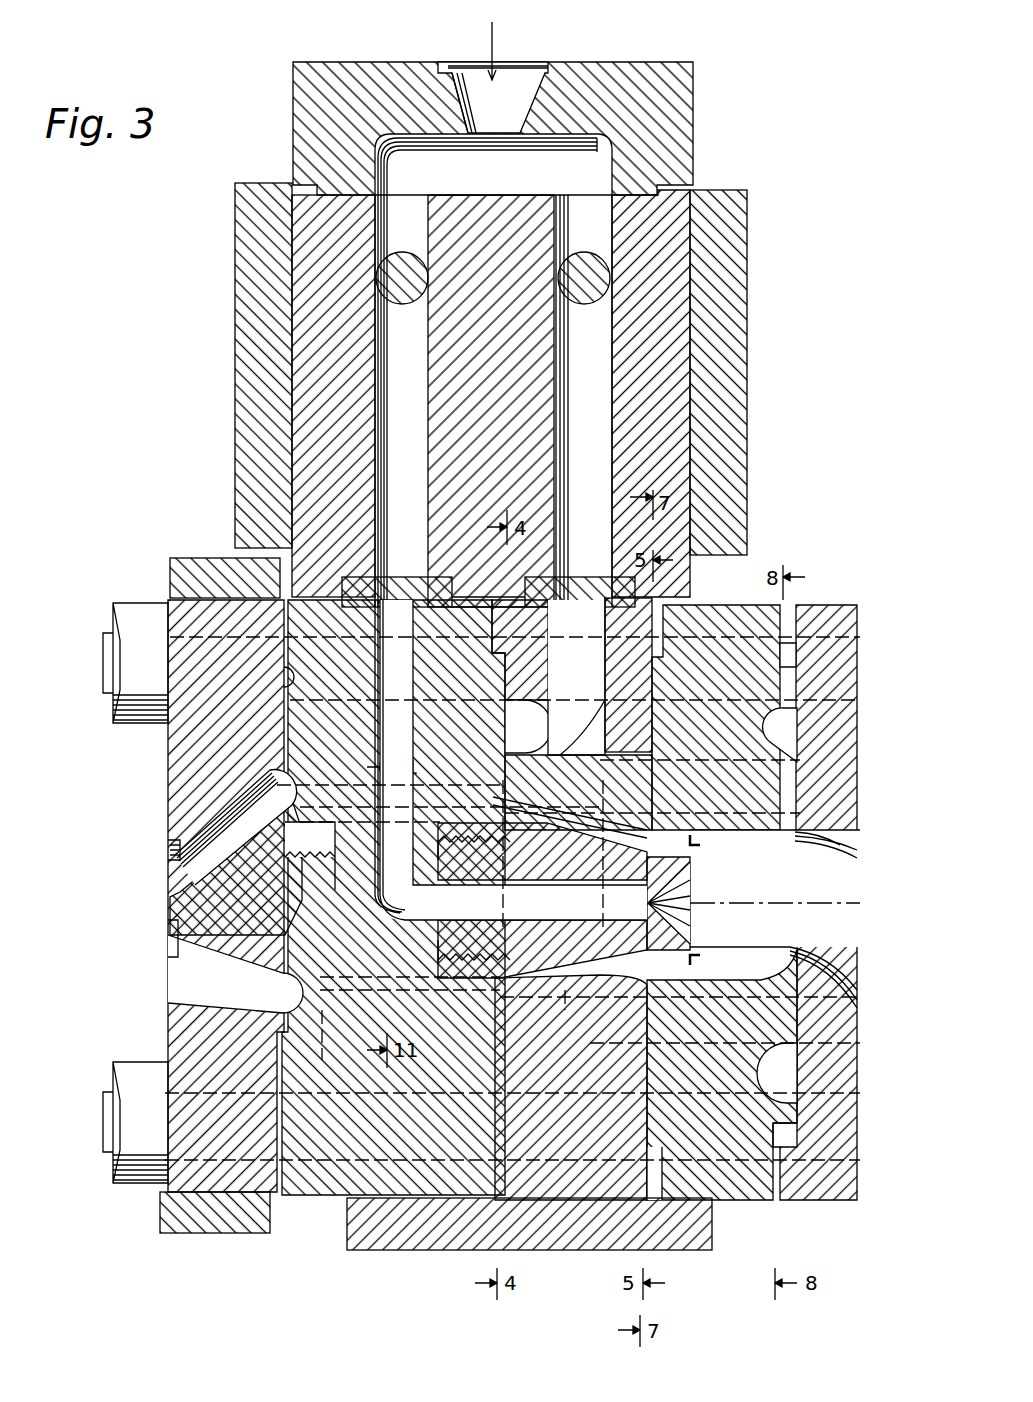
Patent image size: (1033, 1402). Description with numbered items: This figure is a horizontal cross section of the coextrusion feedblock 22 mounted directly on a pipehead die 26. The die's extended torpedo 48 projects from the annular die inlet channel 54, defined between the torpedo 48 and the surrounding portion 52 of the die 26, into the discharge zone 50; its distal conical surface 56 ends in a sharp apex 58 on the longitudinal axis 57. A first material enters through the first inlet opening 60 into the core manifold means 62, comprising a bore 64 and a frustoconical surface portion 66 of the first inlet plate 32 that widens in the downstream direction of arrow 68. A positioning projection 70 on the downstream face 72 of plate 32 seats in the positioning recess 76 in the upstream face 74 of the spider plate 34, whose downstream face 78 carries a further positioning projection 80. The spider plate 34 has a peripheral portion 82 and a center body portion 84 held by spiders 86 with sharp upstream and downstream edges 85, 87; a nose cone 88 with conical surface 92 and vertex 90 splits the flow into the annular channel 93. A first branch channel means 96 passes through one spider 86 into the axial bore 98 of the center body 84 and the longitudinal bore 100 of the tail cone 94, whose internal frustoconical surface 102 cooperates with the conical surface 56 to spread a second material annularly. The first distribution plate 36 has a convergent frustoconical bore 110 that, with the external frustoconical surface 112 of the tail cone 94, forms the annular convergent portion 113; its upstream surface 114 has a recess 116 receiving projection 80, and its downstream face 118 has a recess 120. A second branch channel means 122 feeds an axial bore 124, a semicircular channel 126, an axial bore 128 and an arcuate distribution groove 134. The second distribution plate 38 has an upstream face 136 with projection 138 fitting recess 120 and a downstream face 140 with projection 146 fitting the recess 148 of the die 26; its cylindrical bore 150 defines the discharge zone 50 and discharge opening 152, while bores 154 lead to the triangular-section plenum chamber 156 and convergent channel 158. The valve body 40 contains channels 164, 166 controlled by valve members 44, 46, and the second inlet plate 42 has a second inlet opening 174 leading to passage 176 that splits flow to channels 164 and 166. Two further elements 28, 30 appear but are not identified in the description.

The feedblock 22 is at (150, 746).
The pipehead die 26 is at (882, 1205).
The bolt 28 is at (108, 655).
The bolt head 30 is at (130, 620).
The first inlet plate 32 is at (180, 1215).
The spider plate 34 is at (293, 1198).
The first distribution plate 36 is at (566, 1200).
The second distribution plate 38 is at (700, 1148).
The valve body 40 is at (690, 425).
The second inlet plate 42 is at (685, 100).
The valve member 44 is at (395, 275).
The valve member 46 is at (595, 278).
The torpedo 48 is at (850, 882).
The discharge zone 50 is at (815, 782).
The surrounding portion 52 is at (830, 790).
The annular die inlet channel 54 is at (822, 838).
The conical surface 56 is at (680, 890).
The longitudinal axis 57 is at (768, 903).
The sharp apex 58 is at (662, 902).
The first inlet opening 60 is at (175, 928).
The core manifold means 62 is at (168, 1000).
The bore 64 is at (230, 958).
The frustoconical surface portion 66 is at (220, 845).
The arrow 68 is at (110, 893).
The positioning projection 70 is at (288, 770).
The downstream face 72 is at (285, 665).
The upstream face 74 is at (290, 635).
The positioning recess 76 is at (290, 783).
The downstream face 78 is at (495, 632).
The positioning projection 80 is at (505, 672).
The peripheral portion 82 is at (353, 1170).
The center body portion 84 is at (360, 958).
The sharp upstream edge 85 is at (355, 790).
The spider 86 is at (368, 790).
The sharp downstream edge 87 is at (490, 795).
The upstream nose cone 88 is at (250, 985).
The vertex 90 is at (178, 855).
The conical surface 92 is at (262, 1010).
The annular channel 93 is at (378, 712).
The tail cone 94 is at (630, 765).
The first branch channel means 96 is at (250, 585).
The axially extending bore 98 is at (495, 900).
The longitudinal bore 100 is at (600, 802).
The internal frustoconical surface 102 is at (590, 832).
The convergent frustoconical bore 110 is at (560, 992).
The external frustoconical surface 112 is at (625, 768).
The annular convergent portion 113 is at (565, 1002).
The upstream surface 114 is at (422, 1200).
The cylindrical recess 116 is at (362, 1182).
The downstream face 118 is at (690, 1165).
The cylindrical recess 120 is at (820, 1090).
The second branch channel means 122 is at (625, 642).
The axially extending bore 124 is at (620, 700).
The semi-circular channel 126 is at (520, 726).
The axially extending bore 128 is at (605, 995).
The arcuate distribution groove 134 is at (600, 1060).
The upstream face 136 is at (760, 1205).
The cylindrical projection 138 is at (810, 1050).
The downstream face 140 is at (800, 1160).
The cylindrical projection 146 is at (800, 1130).
The cylindrical recess 148 is at (800, 1102).
The cylindrical bore 150 is at (800, 970).
The discharge opening 152 is at (805, 965).
The bores 154 is at (800, 660).
The plenum chamber 156 is at (800, 745).
The radially inwardly extending channel 158 is at (830, 1000).
The channel 164 is at (380, 355).
The channel 166 is at (608, 366).
The second inlet opening 174 is at (505, 62).
The passage 176 is at (493, 370).